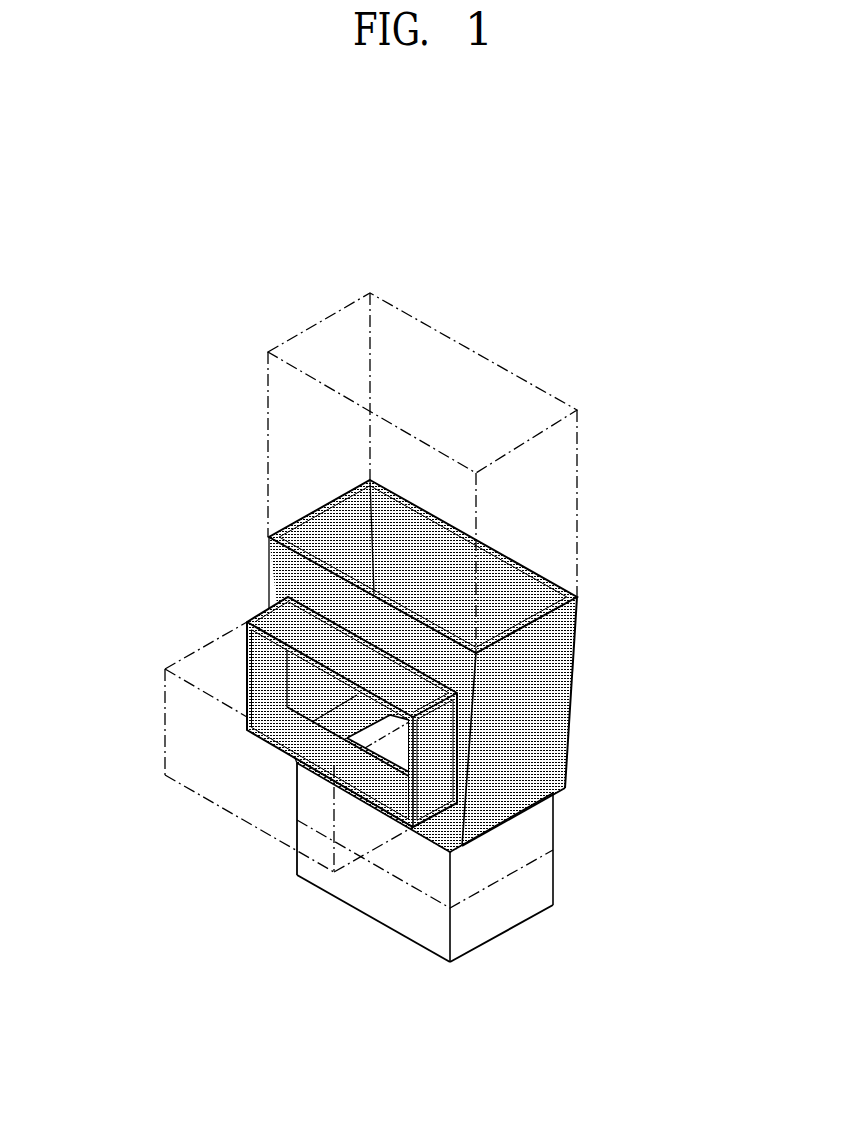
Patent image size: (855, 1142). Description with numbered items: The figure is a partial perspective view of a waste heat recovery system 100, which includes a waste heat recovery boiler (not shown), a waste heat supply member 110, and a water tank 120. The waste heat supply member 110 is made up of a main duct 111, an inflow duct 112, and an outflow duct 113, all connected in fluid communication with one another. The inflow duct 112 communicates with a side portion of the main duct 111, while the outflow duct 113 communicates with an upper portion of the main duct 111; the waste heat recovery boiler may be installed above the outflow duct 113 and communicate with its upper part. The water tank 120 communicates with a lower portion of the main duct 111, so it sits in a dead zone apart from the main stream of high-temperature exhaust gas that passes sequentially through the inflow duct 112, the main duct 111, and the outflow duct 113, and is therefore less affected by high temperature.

The waste heat recovery system 100 is at (410, 626).
The waste heat supply member 110 is at (377, 581).
The main duct 111 is at (557, 687).
The inflow duct 112 is at (163, 722).
The outflow duct 113 is at (473, 352).
The water tank 120 is at (690, 818).